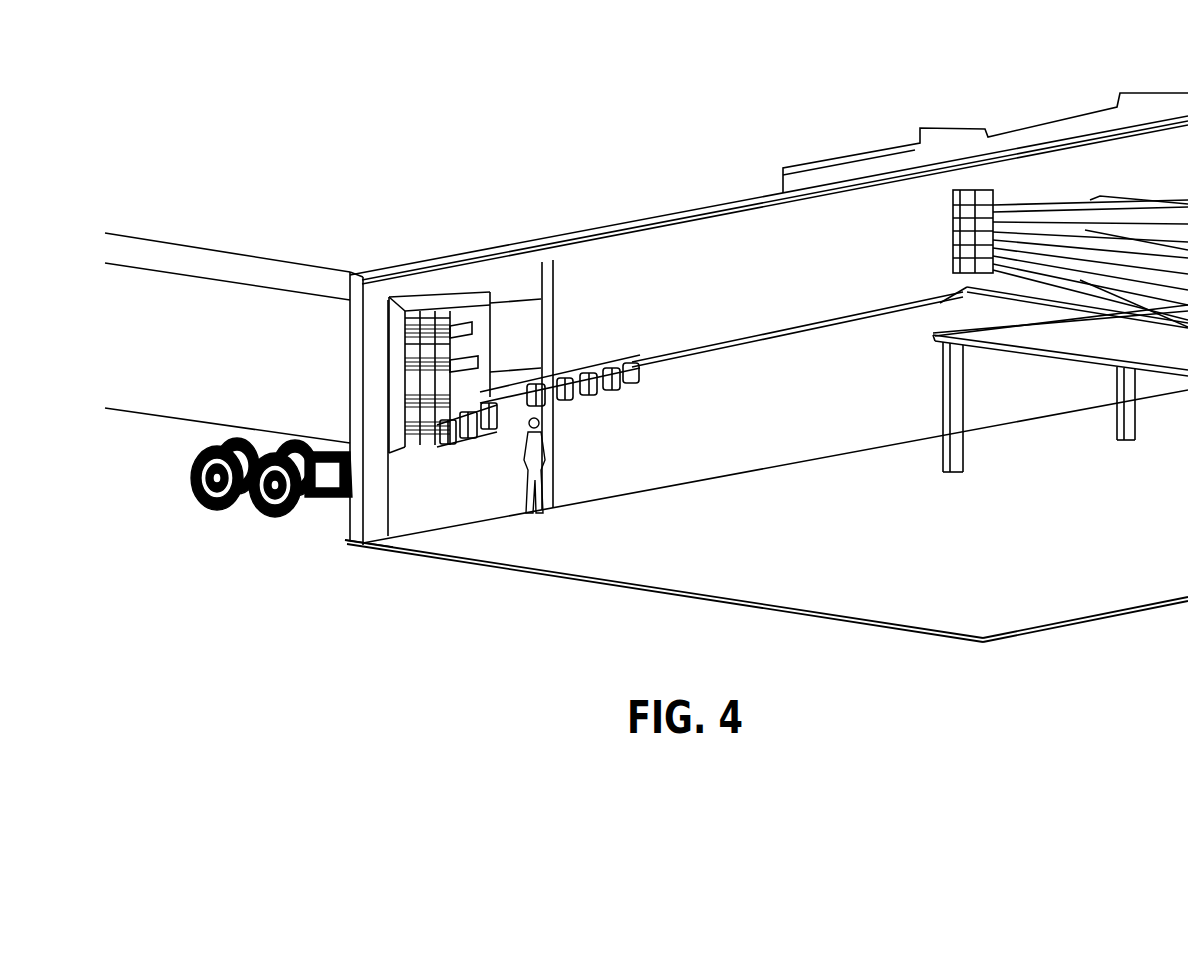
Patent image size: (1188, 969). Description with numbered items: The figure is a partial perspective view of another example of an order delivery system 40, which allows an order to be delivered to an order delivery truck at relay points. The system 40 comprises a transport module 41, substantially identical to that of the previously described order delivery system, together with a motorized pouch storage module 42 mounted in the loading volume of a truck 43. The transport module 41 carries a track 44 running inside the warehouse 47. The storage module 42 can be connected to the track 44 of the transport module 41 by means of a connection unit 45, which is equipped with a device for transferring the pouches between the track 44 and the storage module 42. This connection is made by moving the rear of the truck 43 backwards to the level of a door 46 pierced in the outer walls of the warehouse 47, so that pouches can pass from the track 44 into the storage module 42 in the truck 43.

The order delivery system 40 is at (818, 545).
The transport module 41 is at (1062, 454).
The motorized pouch storage module 42 is at (457, 327).
The truck 43 is at (440, 303).
The track 44 is at (757, 335).
The connection unit 45 is at (437, 397).
The door 46 is at (343, 490).
The warehouse 47 is at (648, 283).